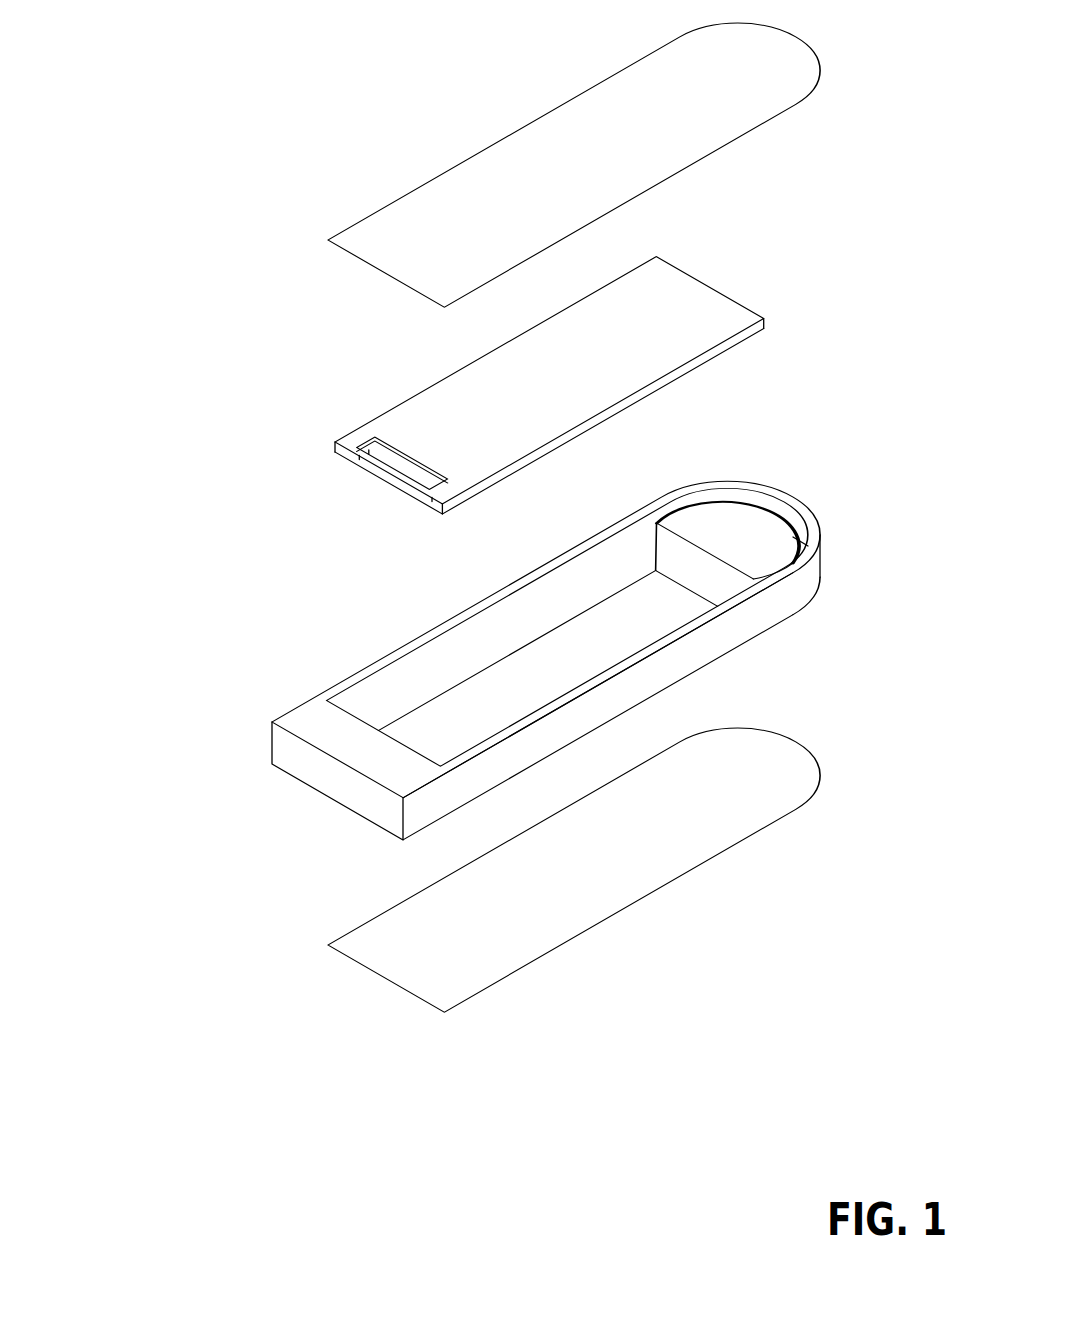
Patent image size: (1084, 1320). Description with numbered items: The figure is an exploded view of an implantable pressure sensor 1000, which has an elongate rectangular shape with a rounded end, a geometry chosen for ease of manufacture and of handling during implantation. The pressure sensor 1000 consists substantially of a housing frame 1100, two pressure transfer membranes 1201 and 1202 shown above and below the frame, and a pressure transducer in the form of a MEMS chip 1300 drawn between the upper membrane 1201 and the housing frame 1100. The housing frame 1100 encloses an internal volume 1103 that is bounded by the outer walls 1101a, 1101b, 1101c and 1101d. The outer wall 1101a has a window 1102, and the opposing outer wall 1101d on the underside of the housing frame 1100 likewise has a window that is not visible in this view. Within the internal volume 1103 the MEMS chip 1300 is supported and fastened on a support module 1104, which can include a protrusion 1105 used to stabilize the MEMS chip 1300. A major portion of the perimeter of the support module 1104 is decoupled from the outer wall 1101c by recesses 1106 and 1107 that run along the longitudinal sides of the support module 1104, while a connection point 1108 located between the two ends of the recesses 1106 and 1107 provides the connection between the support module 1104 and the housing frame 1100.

The implantable pressure sensor 1000 is at (187, 218).
The housing frame 1100 is at (512, 685).
The outer wall 1101a is at (313, 717).
The outer wall 1101b is at (287, 758).
The outer wall 1101c is at (773, 617).
The outer wall 1101d is at (307, 793).
The window 1102 is at (403, 755).
The internal volume 1103 is at (425, 690).
The support module 1104 is at (523, 698).
The protrusion 1105 is at (752, 528).
The recess 1106 is at (693, 487).
The recess 1107 is at (823, 550).
The connection point 1108 is at (765, 517).
The pressure transfer membrane 1201 is at (495, 175).
The pressure transfer membrane 1202 is at (552, 902).
The MEMS chip 1300 is at (675, 313).